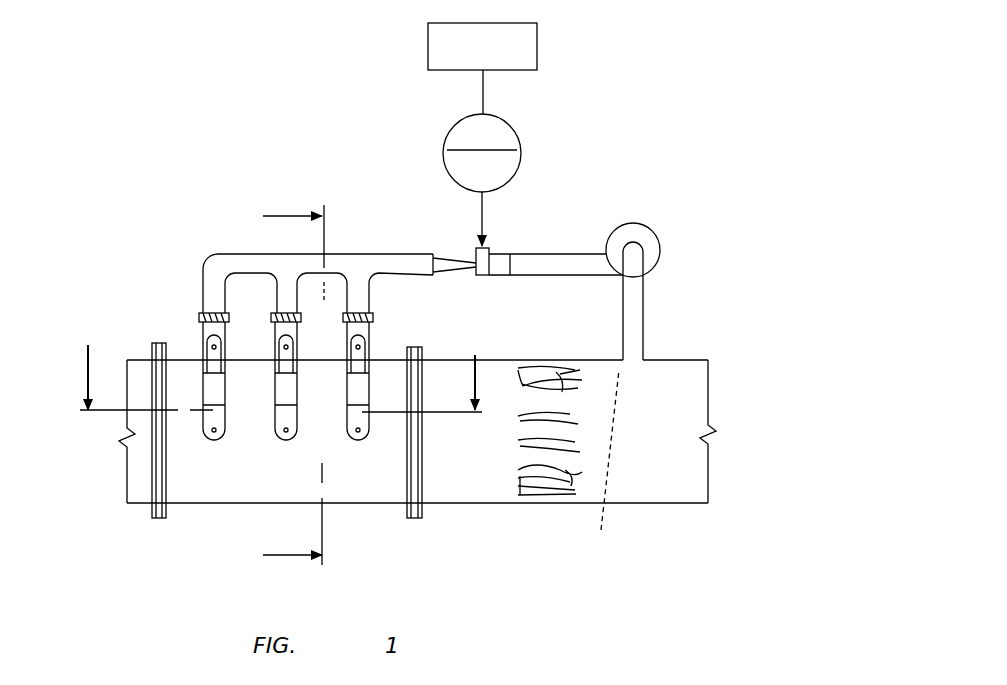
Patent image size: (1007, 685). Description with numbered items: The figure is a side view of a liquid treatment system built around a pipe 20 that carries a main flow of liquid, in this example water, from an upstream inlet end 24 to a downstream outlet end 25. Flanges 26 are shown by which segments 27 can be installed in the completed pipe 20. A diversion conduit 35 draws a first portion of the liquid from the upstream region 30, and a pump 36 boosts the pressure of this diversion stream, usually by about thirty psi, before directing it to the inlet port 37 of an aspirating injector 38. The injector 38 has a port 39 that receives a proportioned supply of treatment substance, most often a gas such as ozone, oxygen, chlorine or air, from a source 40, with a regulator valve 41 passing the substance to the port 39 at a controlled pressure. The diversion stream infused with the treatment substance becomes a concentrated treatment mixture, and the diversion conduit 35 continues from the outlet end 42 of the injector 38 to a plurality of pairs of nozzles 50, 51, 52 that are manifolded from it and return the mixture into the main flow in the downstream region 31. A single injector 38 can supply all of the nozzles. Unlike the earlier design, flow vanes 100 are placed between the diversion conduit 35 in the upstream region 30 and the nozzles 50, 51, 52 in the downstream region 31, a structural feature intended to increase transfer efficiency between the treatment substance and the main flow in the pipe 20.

The pipe 20 is at (670, 514).
The upstream inlet end 24 is at (708, 490).
The downstream outlet end 25 is at (127, 482).
The flanges 26 is at (160, 520).
The segments 27 is at (213, 505).
The upstream region 30 is at (473, 474).
The downstream region 31 is at (263, 474).
The diversion conduit 35 is at (643, 318).
The pump 36 is at (652, 230).
The inlet port 37 is at (525, 275).
The aspirating injector 38 is at (437, 247).
The port 39 is at (491, 250).
The source 40 is at (537, 48).
The regulator valve 41 is at (514, 122).
The outlet end 42 is at (415, 275).
The pair of nozzles 50 is at (207, 388).
The pair of nozzles 51 is at (273, 388).
The pair of nozzles 52 is at (345, 388).
The flow vanes 100 is at (579, 463).